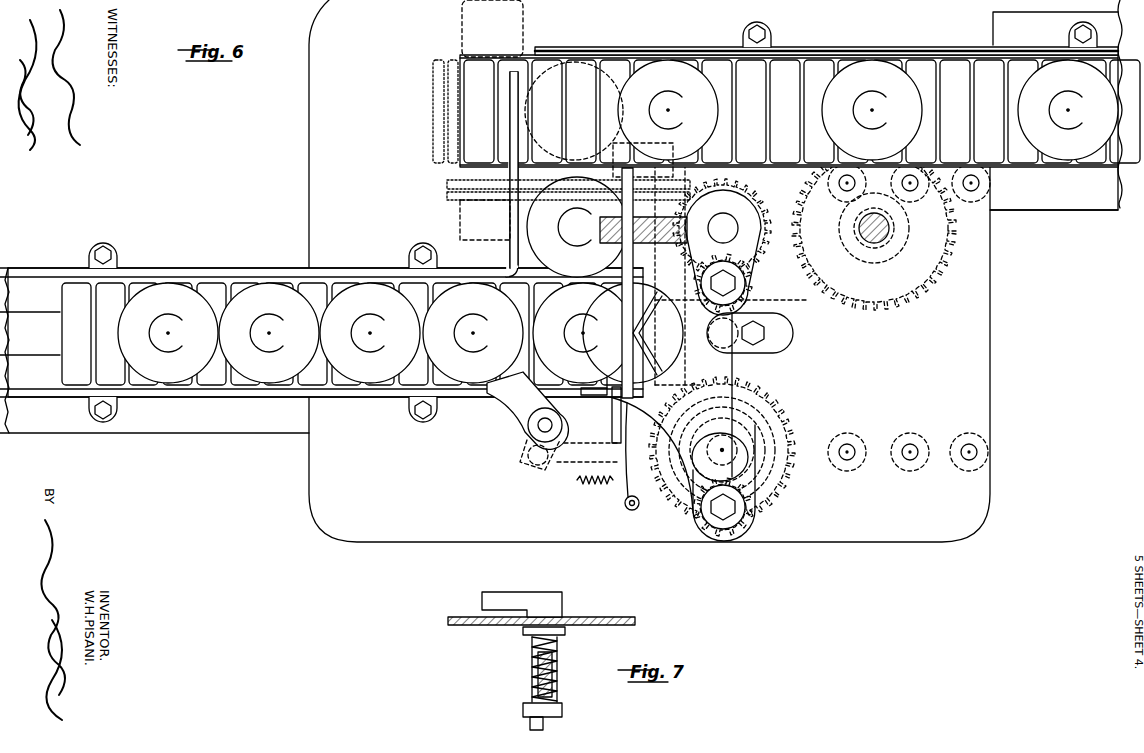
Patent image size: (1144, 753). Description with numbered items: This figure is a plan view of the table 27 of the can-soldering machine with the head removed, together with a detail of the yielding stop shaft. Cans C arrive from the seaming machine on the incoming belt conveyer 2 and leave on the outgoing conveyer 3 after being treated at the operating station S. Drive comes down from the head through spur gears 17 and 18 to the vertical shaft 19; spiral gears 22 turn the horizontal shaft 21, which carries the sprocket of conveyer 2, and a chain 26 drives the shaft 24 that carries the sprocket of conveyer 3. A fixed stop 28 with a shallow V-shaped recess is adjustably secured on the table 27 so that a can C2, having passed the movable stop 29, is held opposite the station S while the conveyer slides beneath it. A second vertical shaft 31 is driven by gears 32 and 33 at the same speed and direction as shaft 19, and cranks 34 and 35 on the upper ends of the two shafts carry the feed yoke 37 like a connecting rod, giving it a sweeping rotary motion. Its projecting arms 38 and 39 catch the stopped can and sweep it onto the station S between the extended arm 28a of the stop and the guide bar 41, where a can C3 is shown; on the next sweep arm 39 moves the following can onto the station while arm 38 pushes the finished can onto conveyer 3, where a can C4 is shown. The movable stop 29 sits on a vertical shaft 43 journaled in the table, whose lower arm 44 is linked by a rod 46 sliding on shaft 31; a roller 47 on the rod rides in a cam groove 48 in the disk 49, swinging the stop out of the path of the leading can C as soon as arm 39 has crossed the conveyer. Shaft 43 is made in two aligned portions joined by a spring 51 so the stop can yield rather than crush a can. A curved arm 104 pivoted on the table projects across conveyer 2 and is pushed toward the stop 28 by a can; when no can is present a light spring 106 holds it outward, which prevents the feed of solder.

In FIG. 6, the incoming belt conveyer 2 is at (133, 333).
In FIG. 6, the outgoing conveyer 3 is at (745, 107).
In FIG. 6, the spur gear 17 is at (891, 228).
In FIG. 6, the spur gear 18 is at (807, 288).
In FIG. 6, the vertical shaft 19 is at (723, 228).
In FIG. 6, the horizontal shaft 21 is at (686, 260).
In FIG. 6, the spiral gears 22 is at (722, 222).
In FIG. 6, the shaft 24 is at (544, 182).
In FIG. 6, the chain 26 is at (619, 159).
In FIG. 6, the table 27 is at (715, 271).
In FIG. 7, the table 27 is at (612, 620).
In FIG. 6, the fixed stop 28 is at (659, 333).
In FIG. 6, the extended arm of stop 28a is at (628, 205).
In FIG. 6, the movable stop 29 is at (520, 398).
In FIG. 7, the movable stop 29 is at (505, 592).
In FIG. 6, the vertical shaft 31 is at (733, 447).
In FIG. 6, the gear 32 is at (774, 373).
In FIG. 6, the gear 33 is at (798, 391).
In FIG. 6, the crank 34 is at (742, 250).
In FIG. 6, the crank 35 is at (748, 477).
In FIG. 6, the feed yoke 37 is at (770, 338).
In FIG. 6, the projecting arm 38 is at (618, 267).
In FIG. 6, the projecting arm 39 is at (592, 400).
In FIG. 6, the guide bar 41 is at (508, 252).
In FIG. 6, the vertical shaft 43 is at (537, 430).
In FIG. 7, the vertical shaft 43 is at (557, 668).
In FIG. 6, the arm 44 is at (508, 464).
In FIG. 7, the arm 44 is at (523, 710).
In FIG. 6, the rod 46 is at (651, 466).
In FIG. 6, the roller 47 is at (718, 529).
In FIG. 6, the cam groove 48 is at (889, 461).
In FIG. 6, the disk 49 is at (782, 535).
In FIG. 7, the spring 51 is at (536, 670).
In FIG. 6, the curved arm 104 is at (612, 432).
In FIG. 6, the light spring 106 is at (580, 488).
In FIG. 6, the operating station S is at (530, 262).
In FIG. 6, the can C is at (473, 333).
In FIG. 6, the can C2 is at (583, 333).
In FIG. 6, the can C3 is at (577, 227).
In FIG. 6, the can C4 is at (668, 110).